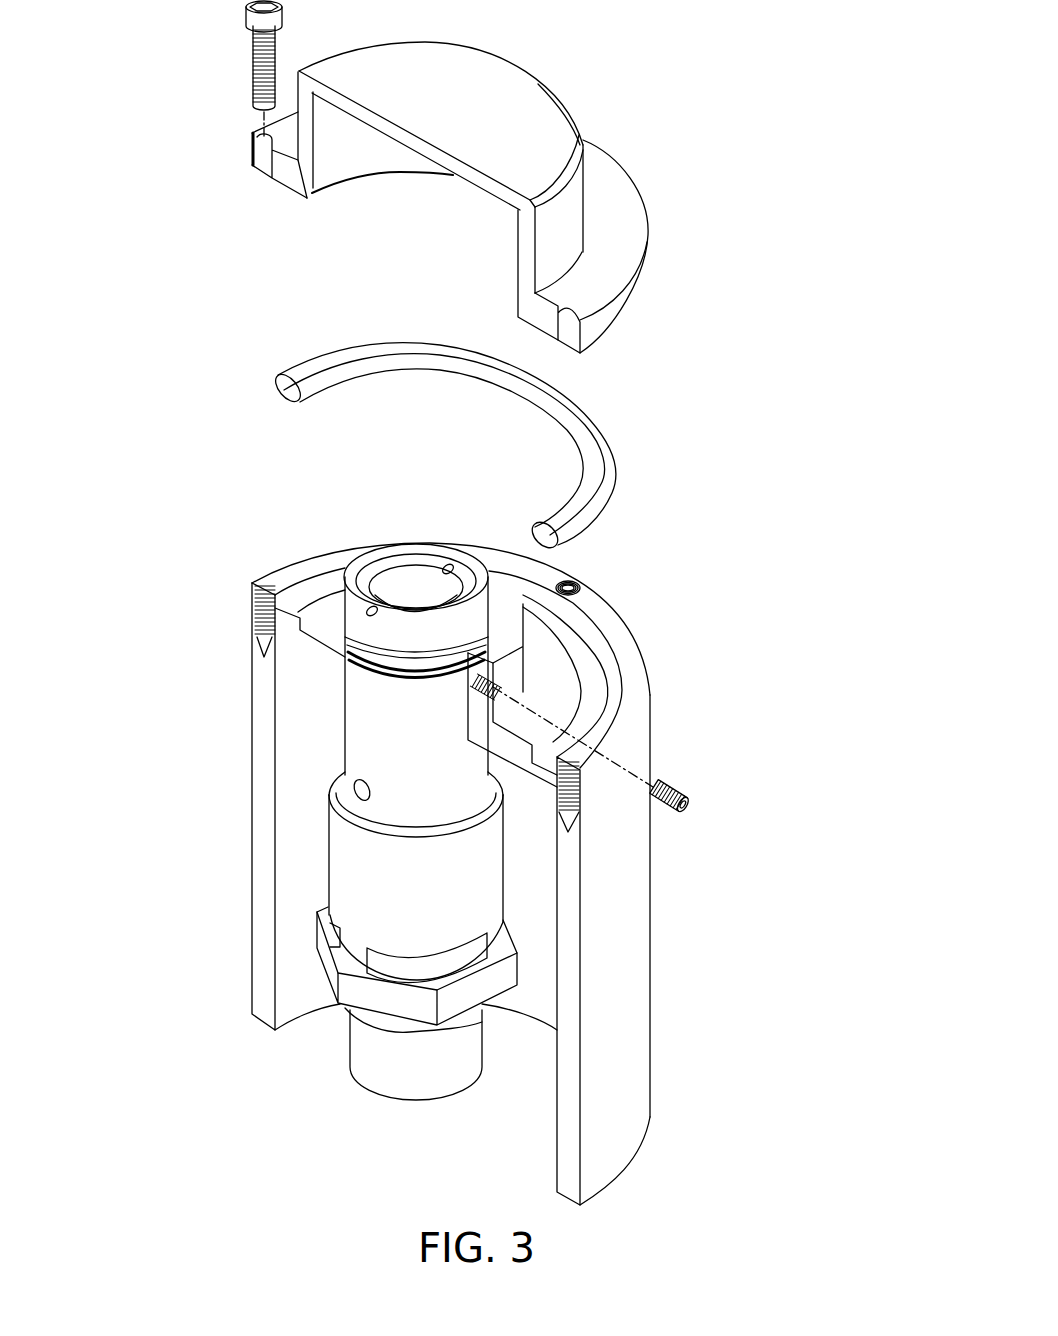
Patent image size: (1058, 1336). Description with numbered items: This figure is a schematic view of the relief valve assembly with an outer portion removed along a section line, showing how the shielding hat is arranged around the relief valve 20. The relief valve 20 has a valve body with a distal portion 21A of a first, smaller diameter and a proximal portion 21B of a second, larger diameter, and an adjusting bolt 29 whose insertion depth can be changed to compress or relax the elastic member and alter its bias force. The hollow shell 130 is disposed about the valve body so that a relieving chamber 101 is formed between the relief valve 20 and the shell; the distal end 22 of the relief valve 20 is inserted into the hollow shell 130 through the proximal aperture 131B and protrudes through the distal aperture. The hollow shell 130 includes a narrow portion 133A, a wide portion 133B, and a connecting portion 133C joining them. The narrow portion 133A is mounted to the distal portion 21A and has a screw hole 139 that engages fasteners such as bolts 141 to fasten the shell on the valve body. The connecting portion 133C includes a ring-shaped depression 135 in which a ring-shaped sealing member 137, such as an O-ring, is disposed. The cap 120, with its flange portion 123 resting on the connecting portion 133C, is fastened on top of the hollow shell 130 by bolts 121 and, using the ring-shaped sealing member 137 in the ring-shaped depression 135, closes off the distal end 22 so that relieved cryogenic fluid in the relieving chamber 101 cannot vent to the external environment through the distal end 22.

The relief valve 20 is at (368, 1093).
The distal portion 21A is at (365, 695).
The proximal portion 21B is at (365, 892).
The distal end 22 is at (360, 570).
The adjusting bolt 29 is at (413, 578).
The relieving chamber 101 is at (297, 812).
The cap 120 is at (518, 73).
The bolts 121 is at (256, 63).
The flange portion 123 is at (636, 227).
The hollow shell 130 is at (742, 610).
The proximal aperture 131B is at (300, 1037).
The narrow portion 133A is at (513, 673).
The wide portion 133B is at (643, 745).
The connecting portion 133C is at (553, 703).
The ring-shaped depression 135 is at (300, 592).
The ring-shaped sealing member 137 is at (307, 357).
The screw hole 139 is at (410, 742).
The bolts 141 is at (685, 808).